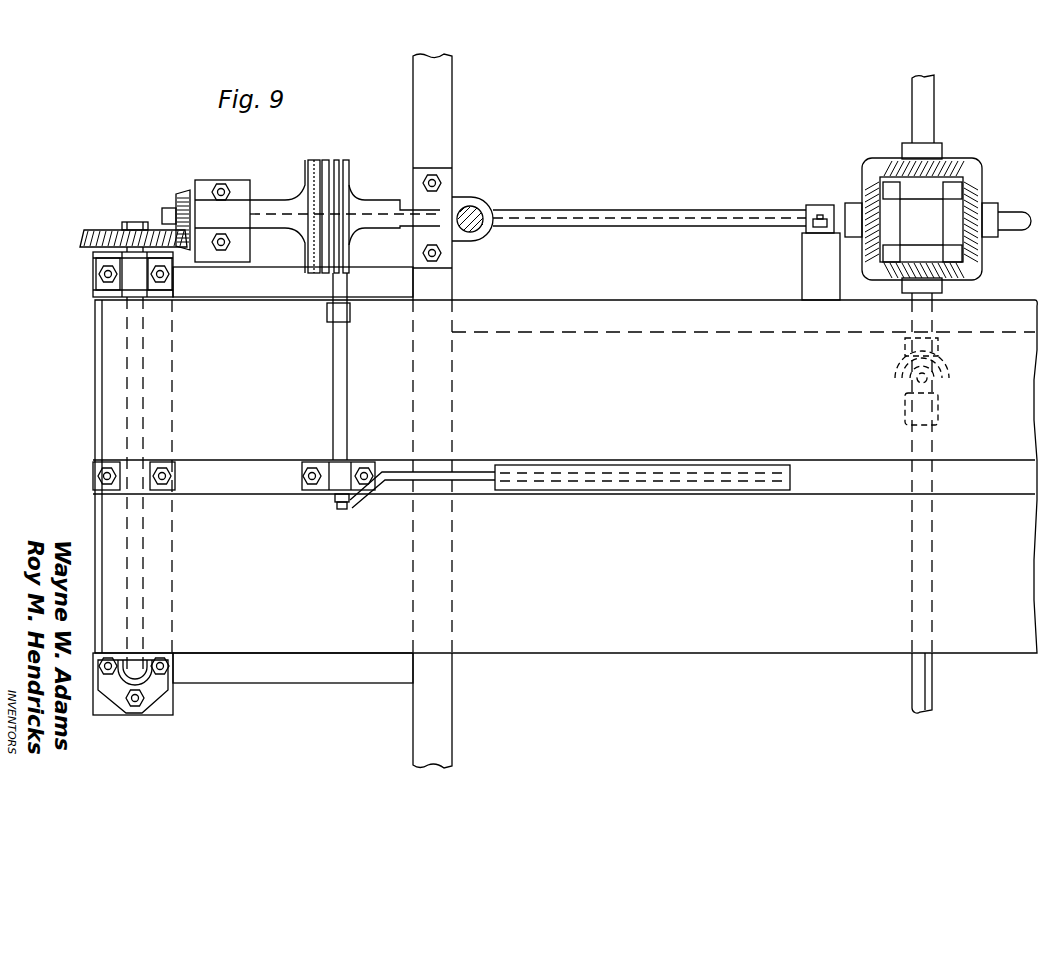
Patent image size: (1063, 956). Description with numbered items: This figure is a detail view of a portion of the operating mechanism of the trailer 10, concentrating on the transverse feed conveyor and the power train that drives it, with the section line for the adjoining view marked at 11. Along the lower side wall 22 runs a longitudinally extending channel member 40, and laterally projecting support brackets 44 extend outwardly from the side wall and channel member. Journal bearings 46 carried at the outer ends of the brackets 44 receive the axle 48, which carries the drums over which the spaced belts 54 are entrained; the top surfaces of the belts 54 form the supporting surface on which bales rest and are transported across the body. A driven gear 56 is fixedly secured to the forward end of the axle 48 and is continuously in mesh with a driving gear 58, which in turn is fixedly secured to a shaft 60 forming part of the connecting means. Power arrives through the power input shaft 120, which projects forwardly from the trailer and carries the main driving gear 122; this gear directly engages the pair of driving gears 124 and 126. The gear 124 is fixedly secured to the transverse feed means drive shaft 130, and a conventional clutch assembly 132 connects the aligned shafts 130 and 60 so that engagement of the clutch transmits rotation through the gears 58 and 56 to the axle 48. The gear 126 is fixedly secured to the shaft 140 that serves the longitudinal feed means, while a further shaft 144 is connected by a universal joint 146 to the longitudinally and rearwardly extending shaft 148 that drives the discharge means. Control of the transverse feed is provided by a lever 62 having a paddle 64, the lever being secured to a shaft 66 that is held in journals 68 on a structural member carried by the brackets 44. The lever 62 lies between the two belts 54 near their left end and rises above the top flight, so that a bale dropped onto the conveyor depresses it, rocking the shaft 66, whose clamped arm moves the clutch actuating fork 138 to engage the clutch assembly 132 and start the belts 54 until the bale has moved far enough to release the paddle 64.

The trailer 10 is at (85, 492).
The section line 11- 11 is at (294, 132).
The side wall 22 is at (456, 113).
The channel member 40 is at (430, 747).
The support bracket 44 is at (288, 284).
The journal bearing 46 is at (133, 280).
The axle 48 is at (122, 362).
The belt 54 is at (565, 476).
The driven gear 56 is at (97, 232).
The driving gear 58 is at (175, 192).
The shaft 60 is at (163, 212).
The lever 62 is at (468, 478).
The paddle 64 is at (550, 473).
The shaft 66 is at (335, 384).
The journal 68 is at (338, 481).
The power input shaft 120 is at (930, 108).
The main driving gear 122 is at (963, 152).
The driving gear 124 is at (860, 180).
The driving gear 126 is at (981, 197).
The transverse feed means drive shaft 130 is at (578, 215).
The clutch assembly 132 is at (306, 162).
The clutch actuating fork 138 is at (897, 282).
The shaft 140 is at (1018, 228).
The shaft 144 is at (935, 298).
The universal joint 146 is at (942, 378).
The shaft 148 is at (920, 686).